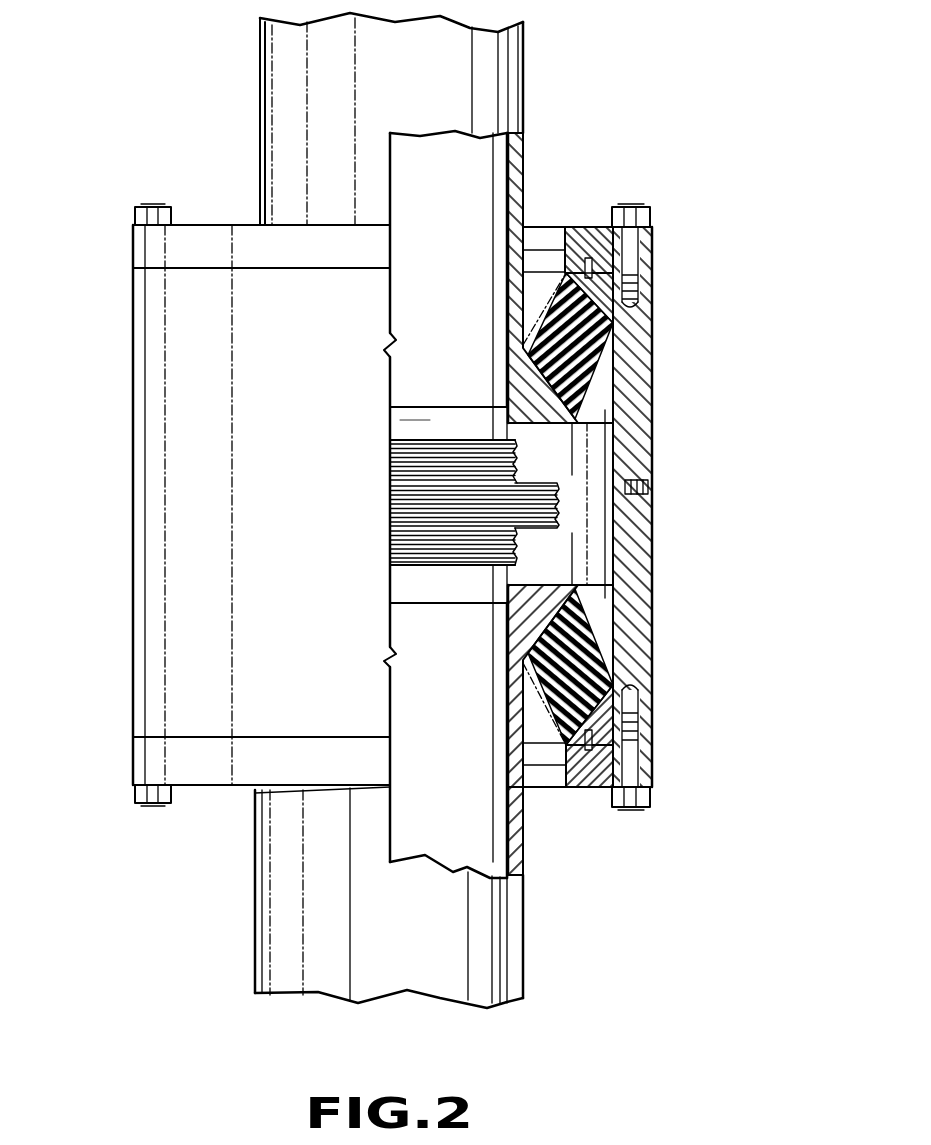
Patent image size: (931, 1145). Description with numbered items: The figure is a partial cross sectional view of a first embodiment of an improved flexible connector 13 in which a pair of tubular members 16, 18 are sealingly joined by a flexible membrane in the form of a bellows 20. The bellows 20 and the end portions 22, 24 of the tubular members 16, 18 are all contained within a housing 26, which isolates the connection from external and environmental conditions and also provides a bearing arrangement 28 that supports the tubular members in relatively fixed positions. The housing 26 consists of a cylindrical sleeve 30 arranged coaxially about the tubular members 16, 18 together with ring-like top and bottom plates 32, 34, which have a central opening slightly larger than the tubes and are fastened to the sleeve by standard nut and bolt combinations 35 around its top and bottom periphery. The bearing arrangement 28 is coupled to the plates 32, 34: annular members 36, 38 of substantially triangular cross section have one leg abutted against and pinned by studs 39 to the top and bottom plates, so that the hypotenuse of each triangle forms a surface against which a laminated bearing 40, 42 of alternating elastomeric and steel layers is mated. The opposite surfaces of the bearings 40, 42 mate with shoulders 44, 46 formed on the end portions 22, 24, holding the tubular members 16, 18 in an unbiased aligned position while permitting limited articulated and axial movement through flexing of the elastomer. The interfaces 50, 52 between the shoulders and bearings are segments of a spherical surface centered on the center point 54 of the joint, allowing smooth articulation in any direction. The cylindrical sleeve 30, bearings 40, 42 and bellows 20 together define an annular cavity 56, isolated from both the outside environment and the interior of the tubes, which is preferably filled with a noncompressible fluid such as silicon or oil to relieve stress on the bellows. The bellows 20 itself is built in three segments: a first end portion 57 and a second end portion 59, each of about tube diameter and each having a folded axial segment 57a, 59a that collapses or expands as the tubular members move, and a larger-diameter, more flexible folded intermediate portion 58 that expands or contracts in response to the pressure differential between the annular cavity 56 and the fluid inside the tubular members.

The flexible connector 13 is at (710, 264).
The tubular member 16 is at (523, 88).
The tubular member 18 is at (520, 950).
The bellows 20 is at (545, 480).
The end portion 22 is at (507, 280).
The end portion 24 is at (517, 727).
The housing 26 is at (670, 222).
The bearing arrangement 28 is at (682, 340).
The cylindrical sleeve 30 is at (637, 427).
The top plate 32 is at (150, 245).
The bottom plate 34 is at (140, 757).
The nut and bolt combinations 35 is at (158, 186).
The annular member 36 is at (652, 297).
The annular member 38 is at (640, 720).
The studs 39 is at (590, 227).
The bearing 40 is at (640, 383).
The bearing 42 is at (593, 623).
The shoulder 44 is at (513, 383).
The shoulder 46 is at (527, 617).
The interface 50 is at (445, 496).
The interface 52 is at (528, 662).
The center point 54 is at (390, 506).
The annular cavity 56 is at (593, 525).
The first end portion 57 is at (410, 420).
The axial segment 57a is at (393, 457).
The intermediate portion 58 is at (395, 492).
The second end portion 59 is at (403, 575).
The axial segment 59a is at (395, 538).